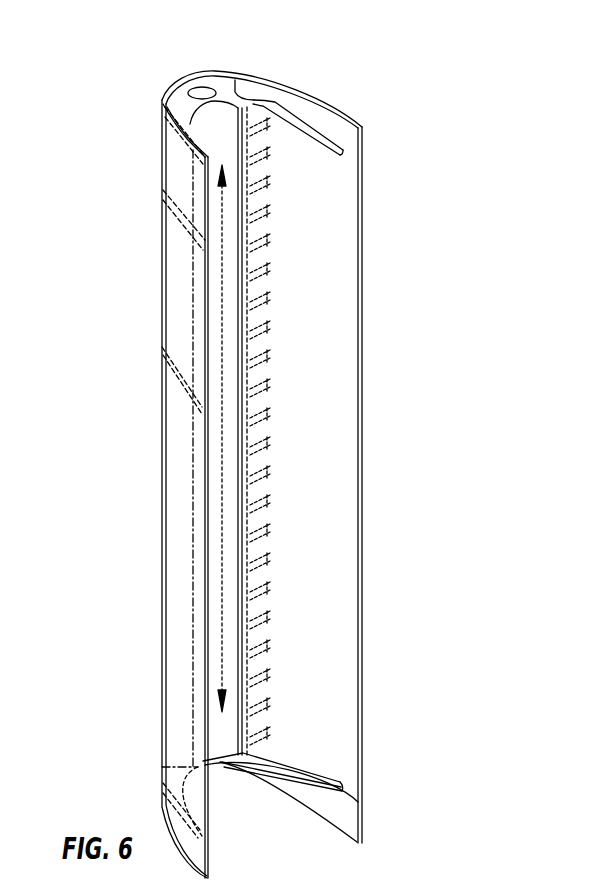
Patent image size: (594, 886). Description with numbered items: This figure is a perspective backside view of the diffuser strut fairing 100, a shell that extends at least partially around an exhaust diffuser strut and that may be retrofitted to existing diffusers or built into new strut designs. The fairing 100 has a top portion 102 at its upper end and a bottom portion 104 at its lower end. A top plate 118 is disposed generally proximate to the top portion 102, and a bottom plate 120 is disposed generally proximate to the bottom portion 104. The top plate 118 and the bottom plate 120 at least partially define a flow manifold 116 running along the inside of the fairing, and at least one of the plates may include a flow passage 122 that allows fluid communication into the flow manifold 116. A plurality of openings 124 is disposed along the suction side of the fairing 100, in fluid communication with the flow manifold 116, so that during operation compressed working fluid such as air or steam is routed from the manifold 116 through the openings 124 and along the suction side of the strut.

The diffuser strut fairing 100 is at (420, 345).
The top portion 102 is at (292, 92).
The bottom portion 104 is at (318, 815).
The flow manifold 116 is at (222, 438).
The top plate 118 is at (268, 104).
The bottom plate 120 is at (294, 762).
The flow passage 122 is at (201, 88).
The openings 124 is at (272, 283).